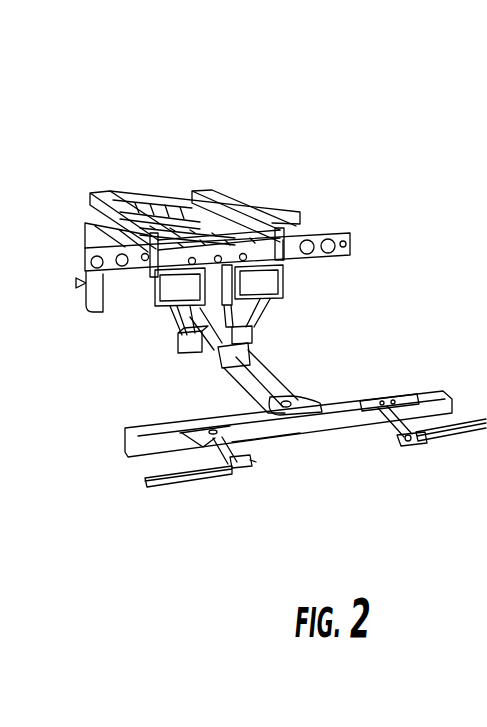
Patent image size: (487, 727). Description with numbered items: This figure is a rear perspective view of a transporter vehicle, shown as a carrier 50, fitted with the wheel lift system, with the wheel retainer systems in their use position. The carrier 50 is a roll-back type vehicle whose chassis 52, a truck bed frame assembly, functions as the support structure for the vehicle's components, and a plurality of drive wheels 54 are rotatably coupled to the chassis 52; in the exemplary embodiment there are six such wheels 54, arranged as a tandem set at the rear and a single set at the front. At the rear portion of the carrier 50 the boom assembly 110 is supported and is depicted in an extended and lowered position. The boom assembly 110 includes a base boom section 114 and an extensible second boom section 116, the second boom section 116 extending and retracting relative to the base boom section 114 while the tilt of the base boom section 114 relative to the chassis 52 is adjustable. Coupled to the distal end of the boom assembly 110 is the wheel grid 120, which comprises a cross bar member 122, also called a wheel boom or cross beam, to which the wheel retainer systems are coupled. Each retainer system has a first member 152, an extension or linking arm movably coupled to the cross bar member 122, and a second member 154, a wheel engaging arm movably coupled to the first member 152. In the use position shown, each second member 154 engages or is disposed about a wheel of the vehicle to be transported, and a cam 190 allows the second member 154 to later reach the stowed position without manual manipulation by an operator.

The carrier 50 is at (180, 176).
The chassis 52 is at (108, 190).
The drive wheels 54 is at (88, 315).
The boom assembly 110 is at (285, 346).
The base boom section 114 is at (202, 350).
The second boom section 116 is at (245, 390).
The wheel grid 120 is at (99, 472).
The cross bar member 122 is at (336, 397).
The first member 152 is at (382, 432).
The second member 154 is at (474, 430).
The cam 190 is at (254, 464).